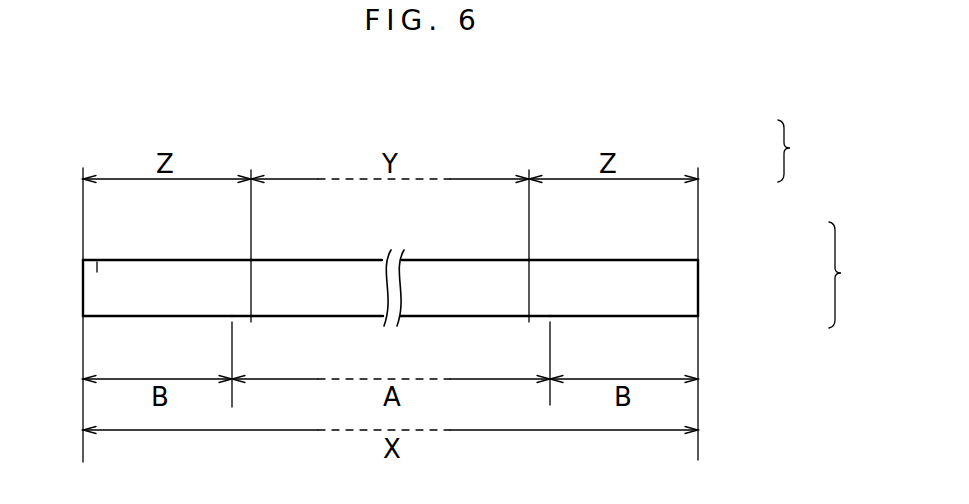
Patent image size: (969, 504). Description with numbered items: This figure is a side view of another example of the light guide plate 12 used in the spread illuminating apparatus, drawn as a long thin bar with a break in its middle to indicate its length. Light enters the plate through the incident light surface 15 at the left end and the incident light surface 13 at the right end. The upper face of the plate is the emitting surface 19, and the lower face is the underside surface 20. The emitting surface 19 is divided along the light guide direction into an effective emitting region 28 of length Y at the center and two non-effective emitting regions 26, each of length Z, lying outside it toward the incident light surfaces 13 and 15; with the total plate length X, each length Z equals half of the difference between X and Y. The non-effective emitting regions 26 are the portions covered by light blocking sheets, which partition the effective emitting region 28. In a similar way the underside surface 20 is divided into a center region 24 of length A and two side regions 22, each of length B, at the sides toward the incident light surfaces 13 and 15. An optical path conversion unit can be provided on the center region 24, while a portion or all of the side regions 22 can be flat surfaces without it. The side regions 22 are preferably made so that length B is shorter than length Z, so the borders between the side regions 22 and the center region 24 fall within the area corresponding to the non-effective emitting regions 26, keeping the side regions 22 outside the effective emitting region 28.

The light guide plate 12 is at (96, 262).
The incident light surface 13 is at (698, 295).
The incident light surface 15 is at (83, 283).
The emitting surface 19 is at (787, 151).
The underside surface 20 is at (839, 275).
The side regions 22 is at (94, 326).
The center region 24 is at (459, 331).
The non-effective emitting regions 26 is at (175, 247).
The effective emitting region 28 is at (333, 247).